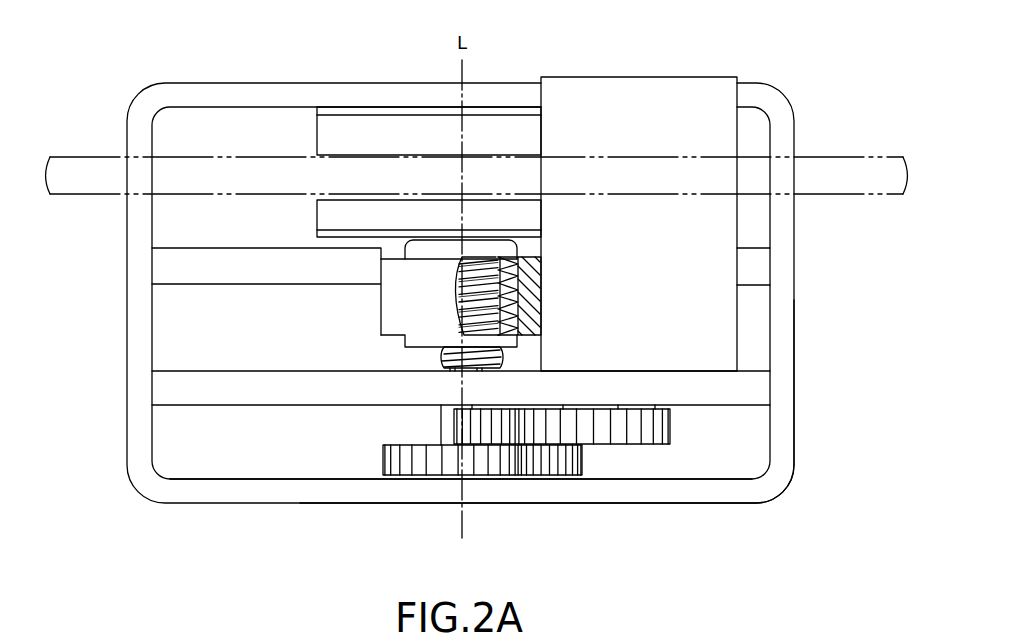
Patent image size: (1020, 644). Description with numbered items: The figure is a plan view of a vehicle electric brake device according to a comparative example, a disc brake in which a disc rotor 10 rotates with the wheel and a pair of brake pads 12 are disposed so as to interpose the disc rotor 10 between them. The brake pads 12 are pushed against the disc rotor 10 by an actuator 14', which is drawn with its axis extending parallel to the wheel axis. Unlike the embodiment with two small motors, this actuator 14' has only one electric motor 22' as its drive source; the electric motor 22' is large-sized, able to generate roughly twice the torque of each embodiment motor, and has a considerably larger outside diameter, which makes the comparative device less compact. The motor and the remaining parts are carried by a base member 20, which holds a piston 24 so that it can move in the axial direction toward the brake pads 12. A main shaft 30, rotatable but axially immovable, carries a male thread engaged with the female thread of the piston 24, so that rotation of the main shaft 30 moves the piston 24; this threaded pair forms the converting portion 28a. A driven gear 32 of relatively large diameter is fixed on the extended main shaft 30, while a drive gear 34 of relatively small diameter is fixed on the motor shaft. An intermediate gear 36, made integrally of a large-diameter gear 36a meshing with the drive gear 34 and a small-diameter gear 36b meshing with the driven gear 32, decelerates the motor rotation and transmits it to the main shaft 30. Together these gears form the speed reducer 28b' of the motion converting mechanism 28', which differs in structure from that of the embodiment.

The disc rotor 10 is at (852, 165).
The brake pads 12 is at (304, 211).
The actuator 14' is at (554, 434).
The base member 20 is at (803, 379).
The electric motor 22' is at (655, 201).
The piston 24 is at (428, 247).
The motion converting mechanism 28' is at (335, 525).
The converting portion 28a is at (396, 378).
The speed reducer 28b' is at (626, 524).
The main shaft 30 is at (418, 356).
The driven gear 32 is at (421, 471).
The drive gear 34 is at (671, 438).
The intermediate gear 36 is at (536, 484).
The large-diameter gear 36a is at (598, 436).
The small-diameter gear 36b is at (571, 466).